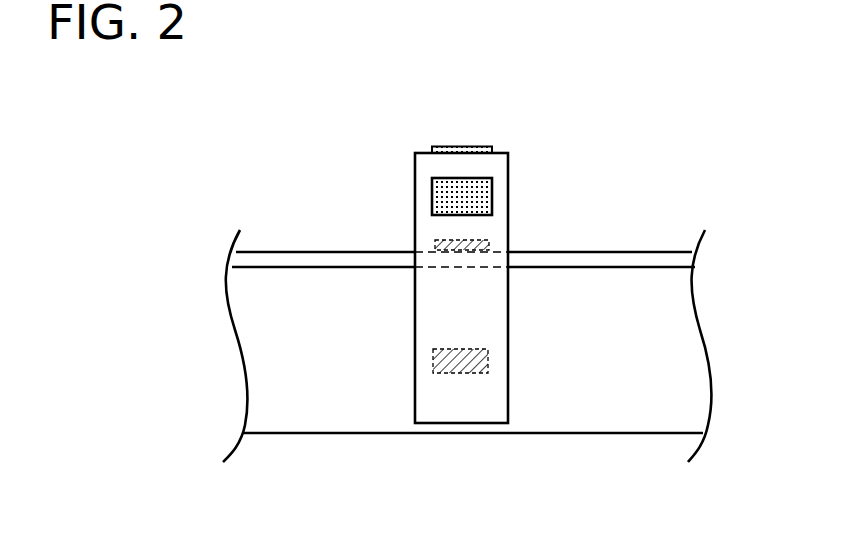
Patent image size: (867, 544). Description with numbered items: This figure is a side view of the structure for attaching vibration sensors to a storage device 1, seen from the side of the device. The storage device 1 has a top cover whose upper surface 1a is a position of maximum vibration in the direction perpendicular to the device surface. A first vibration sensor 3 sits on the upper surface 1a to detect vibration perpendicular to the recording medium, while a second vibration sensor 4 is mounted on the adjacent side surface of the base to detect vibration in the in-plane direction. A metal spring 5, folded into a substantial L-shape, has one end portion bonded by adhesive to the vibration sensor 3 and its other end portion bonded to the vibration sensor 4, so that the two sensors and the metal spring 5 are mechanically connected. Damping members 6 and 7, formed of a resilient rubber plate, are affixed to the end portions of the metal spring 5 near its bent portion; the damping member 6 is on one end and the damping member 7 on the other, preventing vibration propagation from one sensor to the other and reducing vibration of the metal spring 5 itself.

The storage device 1 is at (657, 252).
The upper surface of top cover 1a is at (306, 251).
The first vibration sensor 3 is at (475, 232).
The second vibration sensor 4 is at (458, 373).
The metal spring 5 is at (497, 166).
The damping member 6 is at (462, 146).
The damping member 7 is at (447, 197).